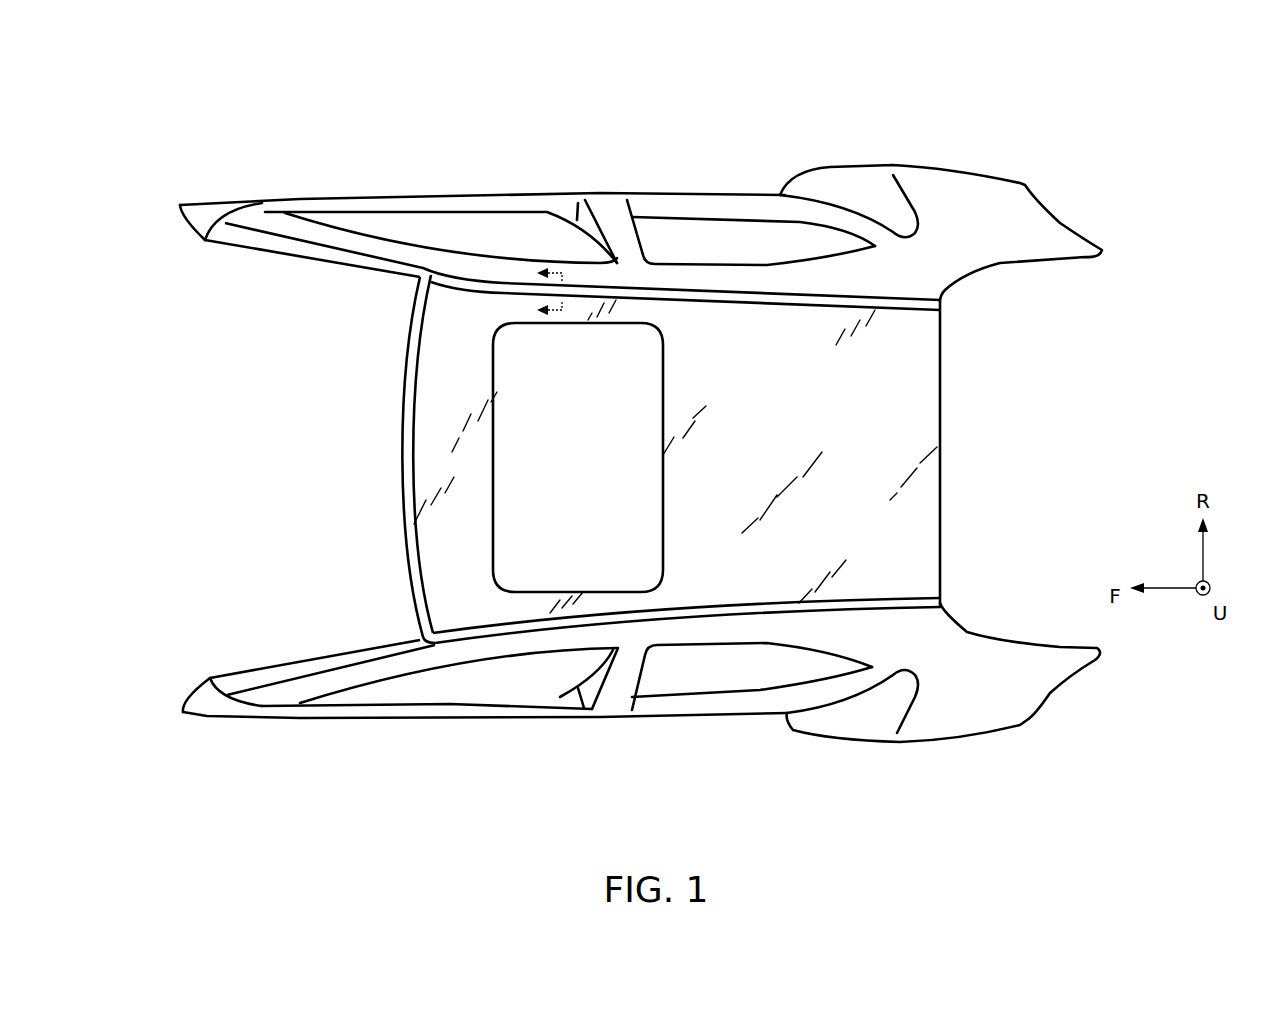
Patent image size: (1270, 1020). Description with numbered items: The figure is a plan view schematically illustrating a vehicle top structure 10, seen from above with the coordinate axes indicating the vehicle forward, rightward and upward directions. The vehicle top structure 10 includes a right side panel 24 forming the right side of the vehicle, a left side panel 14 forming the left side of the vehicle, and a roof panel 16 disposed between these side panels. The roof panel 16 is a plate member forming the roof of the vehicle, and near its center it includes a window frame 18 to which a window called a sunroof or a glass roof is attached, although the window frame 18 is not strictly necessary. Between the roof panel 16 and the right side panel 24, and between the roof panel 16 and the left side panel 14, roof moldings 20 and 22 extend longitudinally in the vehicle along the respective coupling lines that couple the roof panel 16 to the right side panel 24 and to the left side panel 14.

The vehicle top structure 10 is at (1027, 148).
The left side panel 14 is at (795, 632).
The roof panel 16 is at (690, 455).
The window frame 18 is at (493, 365).
The roof molding 20 is at (658, 292).
The roof molding 22 is at (698, 620).
The right side panel 24 is at (832, 268).